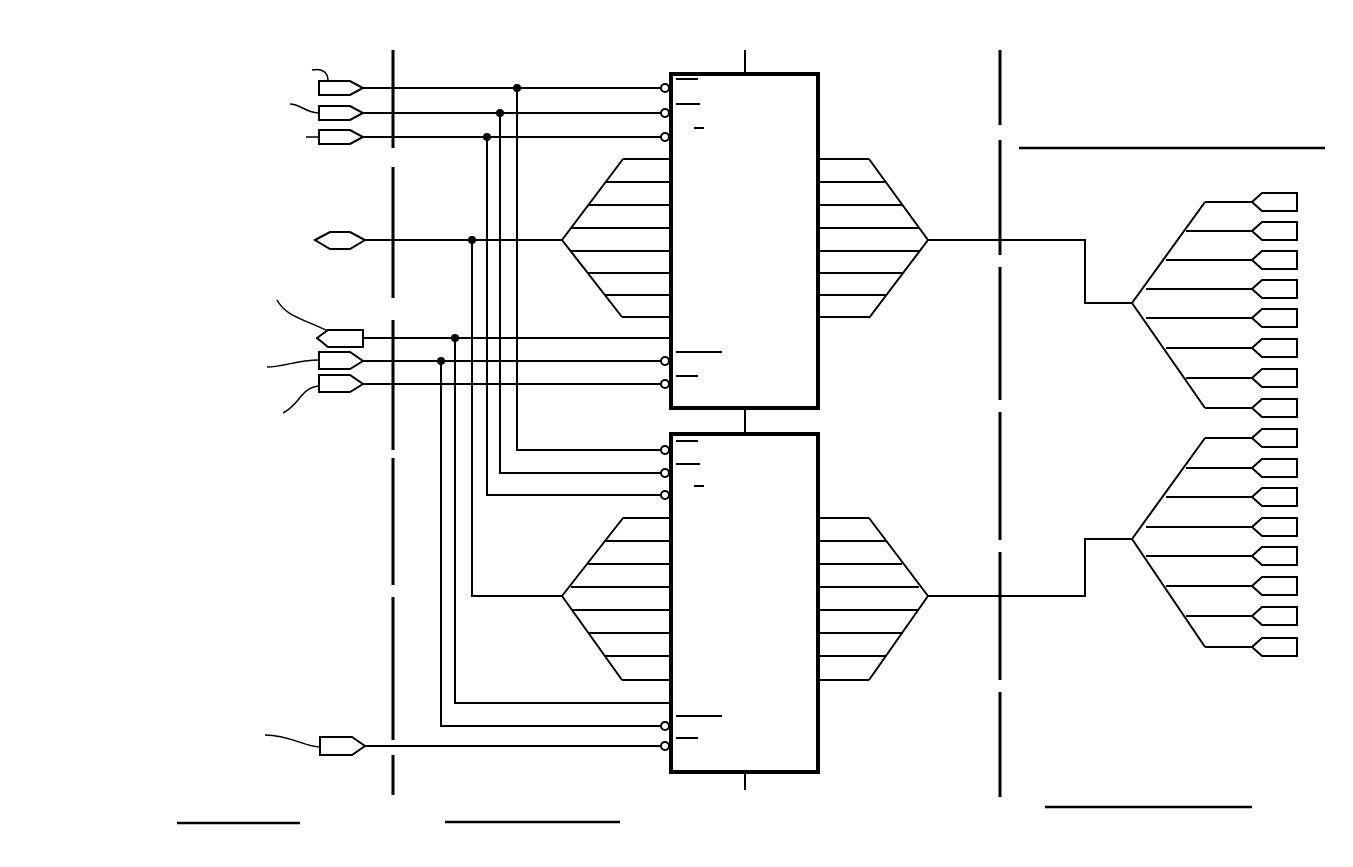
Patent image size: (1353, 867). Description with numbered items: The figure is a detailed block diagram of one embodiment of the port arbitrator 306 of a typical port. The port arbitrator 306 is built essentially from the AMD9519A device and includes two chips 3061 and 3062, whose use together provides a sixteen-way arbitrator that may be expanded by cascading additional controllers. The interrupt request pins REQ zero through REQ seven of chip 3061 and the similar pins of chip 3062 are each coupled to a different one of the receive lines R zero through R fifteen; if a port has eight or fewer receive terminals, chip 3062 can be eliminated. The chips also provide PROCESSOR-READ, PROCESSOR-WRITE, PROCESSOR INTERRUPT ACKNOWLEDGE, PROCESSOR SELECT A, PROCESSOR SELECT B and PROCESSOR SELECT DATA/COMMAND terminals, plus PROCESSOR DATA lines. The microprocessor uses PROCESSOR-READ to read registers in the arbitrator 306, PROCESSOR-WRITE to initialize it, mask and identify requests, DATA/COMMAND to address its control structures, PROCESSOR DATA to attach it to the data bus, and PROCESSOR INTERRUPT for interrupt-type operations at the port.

The port arbitrator 306 is at (736, 436).
The chip 3061 is at (818, 123).
The chip 3062 is at (818, 463).